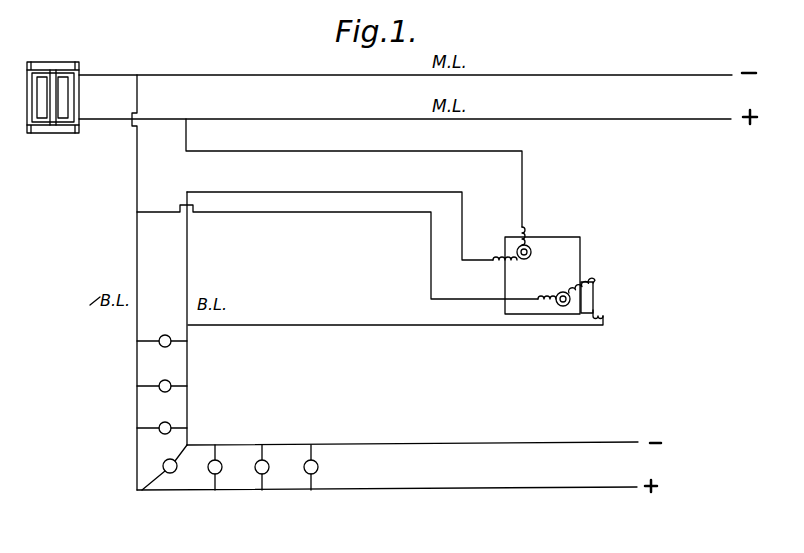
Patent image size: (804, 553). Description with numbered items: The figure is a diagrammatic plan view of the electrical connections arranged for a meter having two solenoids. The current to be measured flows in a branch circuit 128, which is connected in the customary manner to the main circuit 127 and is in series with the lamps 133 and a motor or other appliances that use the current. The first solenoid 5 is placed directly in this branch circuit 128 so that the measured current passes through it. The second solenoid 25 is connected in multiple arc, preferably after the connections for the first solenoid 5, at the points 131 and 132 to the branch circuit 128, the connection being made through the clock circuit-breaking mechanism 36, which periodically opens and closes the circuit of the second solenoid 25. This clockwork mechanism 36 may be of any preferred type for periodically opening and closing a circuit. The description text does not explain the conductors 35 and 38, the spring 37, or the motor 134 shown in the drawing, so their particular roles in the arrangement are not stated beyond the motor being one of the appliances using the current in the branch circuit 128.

The first solenoid 5 is at (531, 252).
The second solenoid 25 is at (560, 308).
The conductor 35 is at (347, 212).
The clock circuit-breaking mechanism 36 is at (584, 300).
The spring 37 is at (597, 280).
The conductor 38 is at (426, 325).
The main circuit 127 is at (369, 77).
The branch circuit 128 is at (390, 152).
The connection 131 is at (138, 213).
The connection 132 is at (190, 327).
The lamps 133 is at (160, 346).
The motor 134 is at (50, 128).